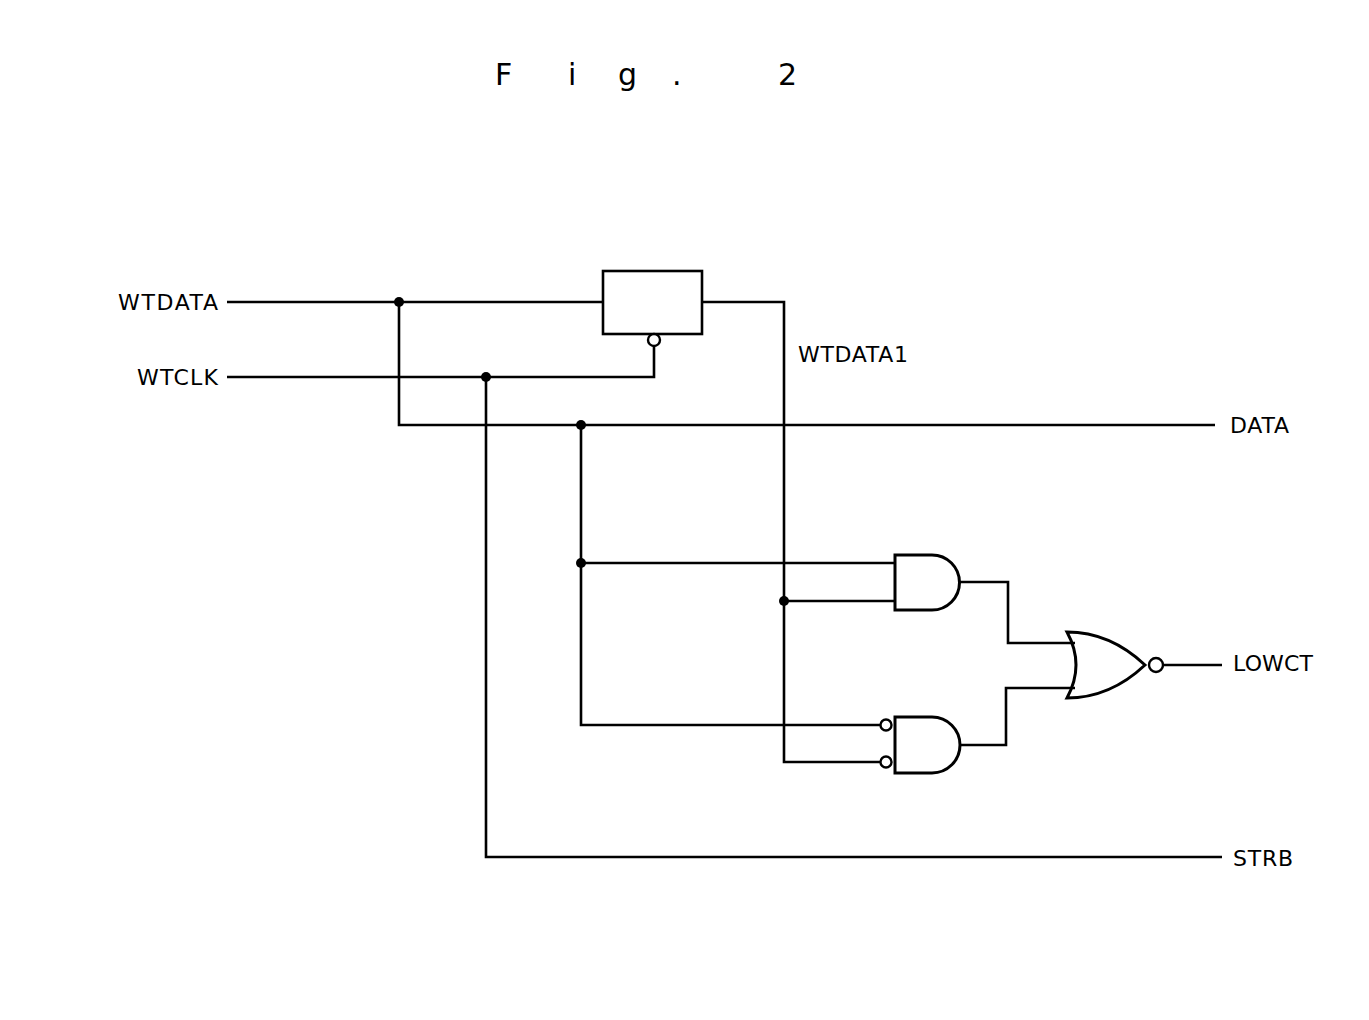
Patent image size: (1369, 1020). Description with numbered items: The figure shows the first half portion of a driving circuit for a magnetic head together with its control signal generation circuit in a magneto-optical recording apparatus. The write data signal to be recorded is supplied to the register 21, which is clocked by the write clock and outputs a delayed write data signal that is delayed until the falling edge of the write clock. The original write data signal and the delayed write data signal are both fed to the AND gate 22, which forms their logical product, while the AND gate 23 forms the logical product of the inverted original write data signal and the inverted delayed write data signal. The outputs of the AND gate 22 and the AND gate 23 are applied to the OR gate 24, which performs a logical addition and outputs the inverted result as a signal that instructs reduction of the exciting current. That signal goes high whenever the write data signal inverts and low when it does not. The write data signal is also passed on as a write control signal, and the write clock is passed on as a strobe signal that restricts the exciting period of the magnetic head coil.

The register 21 is at (665, 271).
The AND gate 22 is at (920, 555).
The AND gate 23 is at (910, 717).
The OR gate 24 is at (1110, 632).